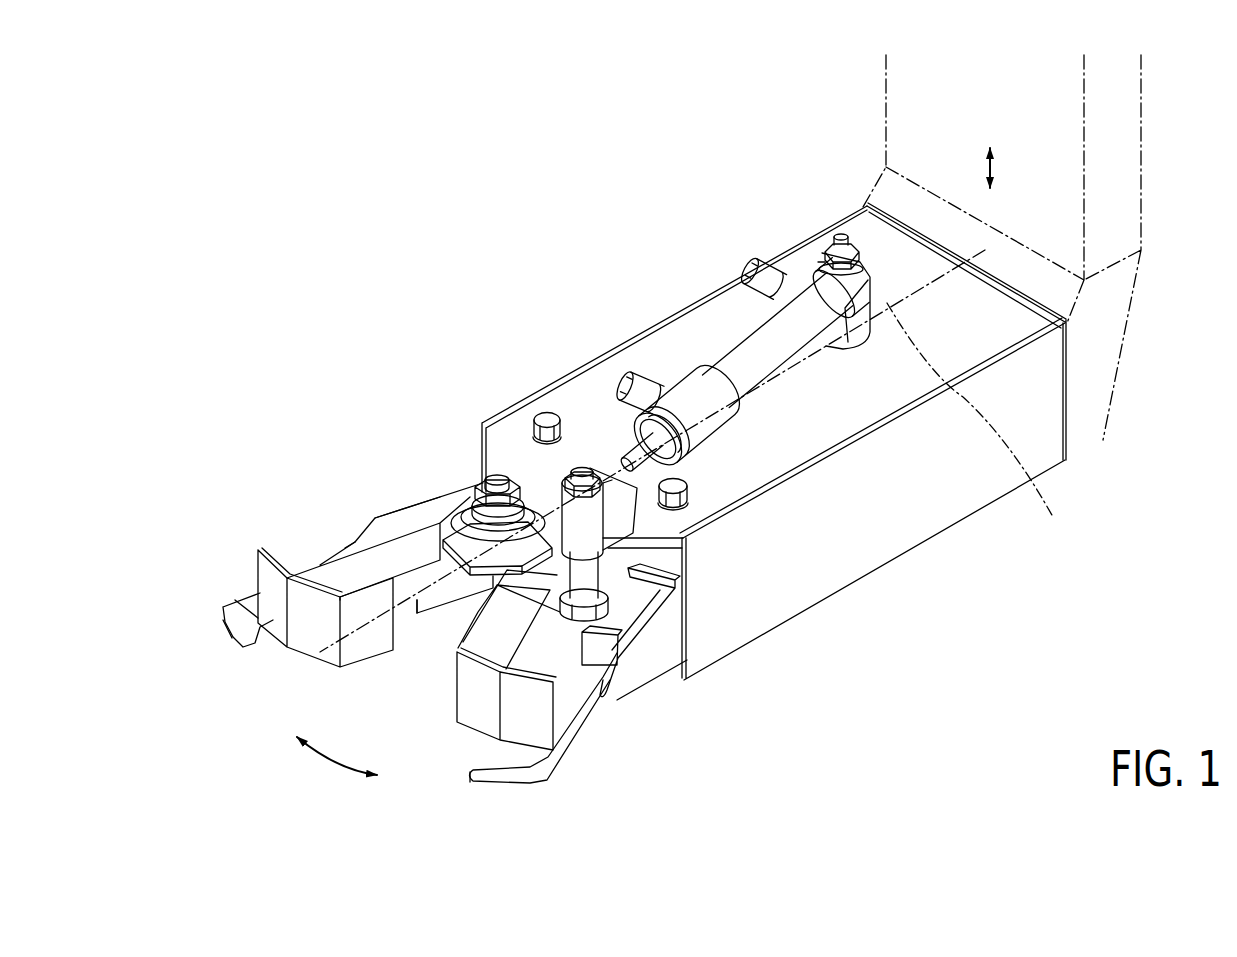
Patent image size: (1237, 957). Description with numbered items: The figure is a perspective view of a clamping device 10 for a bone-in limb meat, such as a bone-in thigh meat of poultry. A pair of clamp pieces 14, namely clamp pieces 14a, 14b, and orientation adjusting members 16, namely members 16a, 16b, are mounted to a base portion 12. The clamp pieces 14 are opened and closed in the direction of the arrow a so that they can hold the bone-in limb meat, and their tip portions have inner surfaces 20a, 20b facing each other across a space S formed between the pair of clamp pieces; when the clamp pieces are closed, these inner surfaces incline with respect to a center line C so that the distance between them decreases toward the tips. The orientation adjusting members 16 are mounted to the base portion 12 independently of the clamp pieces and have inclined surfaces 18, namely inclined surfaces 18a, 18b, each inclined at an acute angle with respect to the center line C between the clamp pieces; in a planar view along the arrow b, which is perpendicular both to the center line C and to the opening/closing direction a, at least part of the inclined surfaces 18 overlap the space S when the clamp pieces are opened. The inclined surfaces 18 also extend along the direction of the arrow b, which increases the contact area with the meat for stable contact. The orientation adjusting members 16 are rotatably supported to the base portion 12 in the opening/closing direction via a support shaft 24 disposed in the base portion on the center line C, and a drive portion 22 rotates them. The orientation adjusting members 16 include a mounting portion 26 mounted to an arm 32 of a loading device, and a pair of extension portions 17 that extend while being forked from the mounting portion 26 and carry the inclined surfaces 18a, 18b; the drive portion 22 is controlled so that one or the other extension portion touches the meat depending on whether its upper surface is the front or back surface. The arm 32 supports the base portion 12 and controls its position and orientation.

The clamping device 10 is at (541, 262).
The base portion 12 is at (693, 441).
The clamp pieces 14 is at (433, 669).
The clamp piece 14a is at (235, 597).
The clamp piece 14b is at (563, 765).
The orientation adjusting members 16 is at (494, 610).
The orientation adjusting member 16a is at (322, 557).
The orientation adjusting member 16b is at (540, 642).
The extension portions 17 is at (343, 560).
The inclined surfaces 18 is at (404, 707).
The inclined surface 18a is at (312, 633).
The inclined surface 18b is at (475, 712).
The inner surface 20a is at (253, 640).
The inner surface 20b is at (463, 763).
The drive portion 22 is at (733, 362).
The support shaft 24 is at (475, 488).
The mounting portion 26 is at (553, 542).
The arm 32 is at (1128, 200).
The space S is at (423, 628).
The arrow a is at (333, 768).
The arrow b is at (995, 168).
The center line C is at (935, 510).